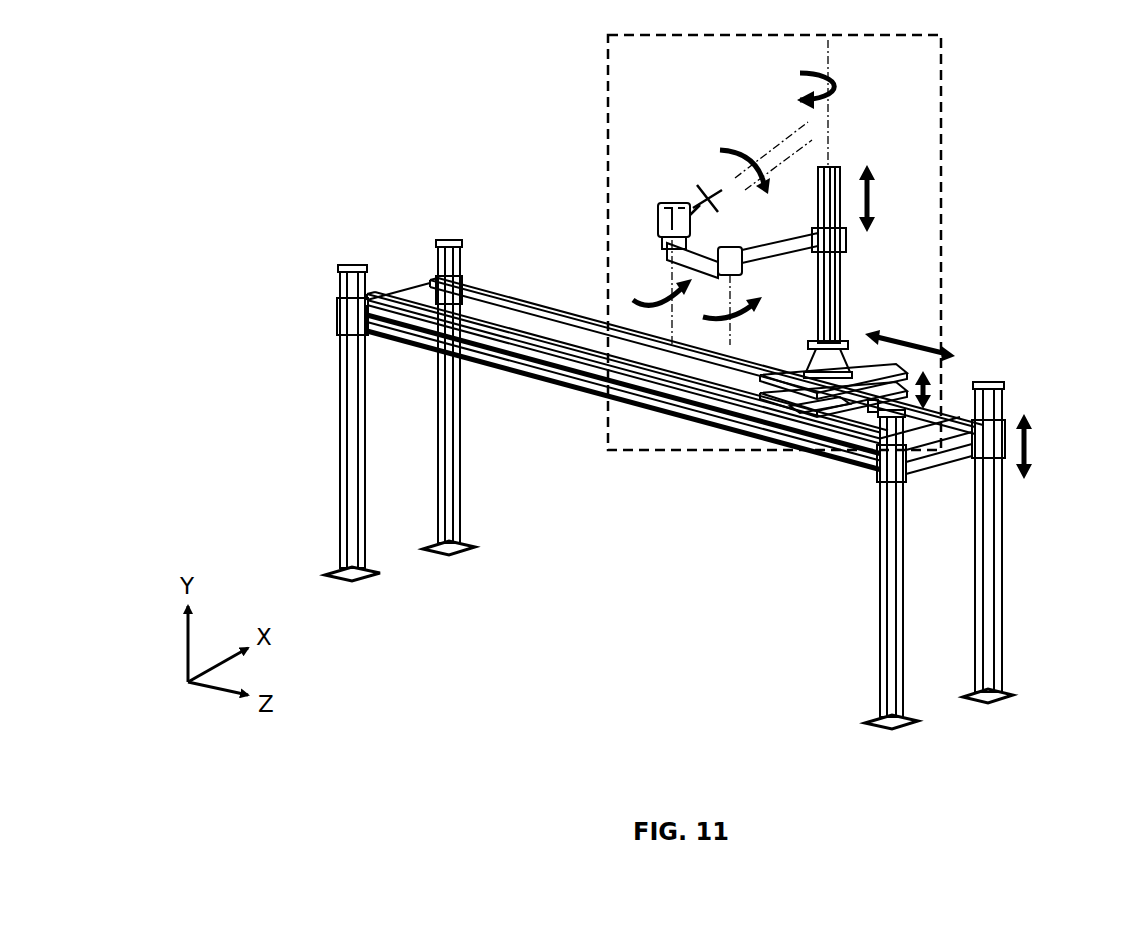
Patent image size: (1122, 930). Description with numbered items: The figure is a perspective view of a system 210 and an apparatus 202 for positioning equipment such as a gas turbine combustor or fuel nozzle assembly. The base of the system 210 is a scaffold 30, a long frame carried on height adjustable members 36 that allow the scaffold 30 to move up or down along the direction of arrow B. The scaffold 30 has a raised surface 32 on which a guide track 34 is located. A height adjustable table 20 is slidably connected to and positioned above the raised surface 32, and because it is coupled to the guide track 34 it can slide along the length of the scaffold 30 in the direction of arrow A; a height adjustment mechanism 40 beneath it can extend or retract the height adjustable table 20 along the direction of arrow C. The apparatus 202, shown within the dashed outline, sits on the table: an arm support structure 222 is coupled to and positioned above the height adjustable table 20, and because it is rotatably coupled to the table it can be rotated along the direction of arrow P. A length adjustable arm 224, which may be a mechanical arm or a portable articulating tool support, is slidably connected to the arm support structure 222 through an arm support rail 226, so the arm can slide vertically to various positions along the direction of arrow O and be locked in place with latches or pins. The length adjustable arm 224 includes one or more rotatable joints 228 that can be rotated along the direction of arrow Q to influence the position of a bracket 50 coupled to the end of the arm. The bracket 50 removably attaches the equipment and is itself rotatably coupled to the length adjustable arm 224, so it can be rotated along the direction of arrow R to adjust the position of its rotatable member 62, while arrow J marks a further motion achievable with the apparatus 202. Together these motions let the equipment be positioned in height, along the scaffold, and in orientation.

The system 210 is at (436, 170).
The apparatus 202 is at (942, 242).
The height adjustable table 20 is at (867, 363).
The arm support structure 222 is at (830, 357).
The length adjustable arm 224 is at (807, 240).
The arm support rail 226 is at (820, 290).
The rotatable joint 228 is at (727, 263).
The bracket 50 is at (663, 215).
The rotatable member 62 is at (703, 200).
The scaffold 30 is at (510, 380).
The raised surface 32 is at (477, 318).
The guide track 34 is at (430, 282).
The height adjustable members 36 is at (345, 440).
The height adjustment mechanism 40 is at (830, 393).
The arrow P is at (866, 88).
The arrow O is at (873, 197).
The arrow J is at (727, 153).
The arrow R is at (642, 288).
The arrow Q is at (707, 323).
The arrow A is at (910, 342).
The arrow B is at (1030, 447).
The arrow C is at (940, 378).